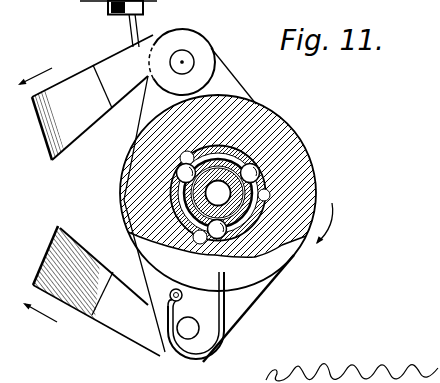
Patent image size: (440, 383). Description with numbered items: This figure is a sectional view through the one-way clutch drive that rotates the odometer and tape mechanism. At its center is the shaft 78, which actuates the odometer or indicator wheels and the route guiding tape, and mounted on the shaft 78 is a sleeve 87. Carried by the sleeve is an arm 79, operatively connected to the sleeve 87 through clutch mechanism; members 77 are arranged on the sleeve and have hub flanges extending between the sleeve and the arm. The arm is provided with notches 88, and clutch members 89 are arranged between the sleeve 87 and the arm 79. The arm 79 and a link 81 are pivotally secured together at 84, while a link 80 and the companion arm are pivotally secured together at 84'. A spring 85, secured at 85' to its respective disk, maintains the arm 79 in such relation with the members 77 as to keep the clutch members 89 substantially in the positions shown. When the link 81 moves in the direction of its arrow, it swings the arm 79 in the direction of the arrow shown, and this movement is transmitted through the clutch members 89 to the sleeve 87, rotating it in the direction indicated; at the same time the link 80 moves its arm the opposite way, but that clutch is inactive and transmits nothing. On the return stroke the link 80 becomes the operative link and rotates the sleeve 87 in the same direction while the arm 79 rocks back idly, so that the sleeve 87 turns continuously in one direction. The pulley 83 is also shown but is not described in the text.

The member 77 is at (281, 276).
The shaft 78 is at (206, 194).
The arm 79 is at (257, 107).
The link 80 is at (83, 79).
The link 81 is at (62, 219).
The pulley 83 is at (214, 66).
The pivotal connection 84 is at (163, 346).
The pivotal connection 84' is at (192, 38).
The spring 85 is at (232, 315).
The spring securing point 85' is at (135, 323).
The sleeve 87 is at (258, 203).
The notch 88 is at (266, 182).
The clutch member 89 is at (256, 168).